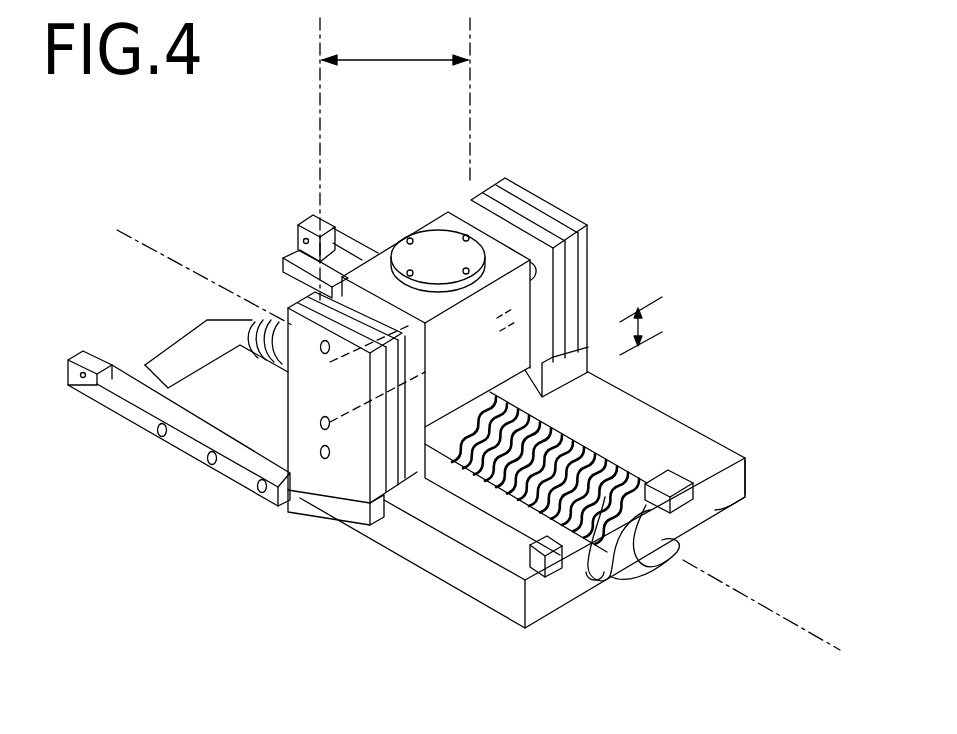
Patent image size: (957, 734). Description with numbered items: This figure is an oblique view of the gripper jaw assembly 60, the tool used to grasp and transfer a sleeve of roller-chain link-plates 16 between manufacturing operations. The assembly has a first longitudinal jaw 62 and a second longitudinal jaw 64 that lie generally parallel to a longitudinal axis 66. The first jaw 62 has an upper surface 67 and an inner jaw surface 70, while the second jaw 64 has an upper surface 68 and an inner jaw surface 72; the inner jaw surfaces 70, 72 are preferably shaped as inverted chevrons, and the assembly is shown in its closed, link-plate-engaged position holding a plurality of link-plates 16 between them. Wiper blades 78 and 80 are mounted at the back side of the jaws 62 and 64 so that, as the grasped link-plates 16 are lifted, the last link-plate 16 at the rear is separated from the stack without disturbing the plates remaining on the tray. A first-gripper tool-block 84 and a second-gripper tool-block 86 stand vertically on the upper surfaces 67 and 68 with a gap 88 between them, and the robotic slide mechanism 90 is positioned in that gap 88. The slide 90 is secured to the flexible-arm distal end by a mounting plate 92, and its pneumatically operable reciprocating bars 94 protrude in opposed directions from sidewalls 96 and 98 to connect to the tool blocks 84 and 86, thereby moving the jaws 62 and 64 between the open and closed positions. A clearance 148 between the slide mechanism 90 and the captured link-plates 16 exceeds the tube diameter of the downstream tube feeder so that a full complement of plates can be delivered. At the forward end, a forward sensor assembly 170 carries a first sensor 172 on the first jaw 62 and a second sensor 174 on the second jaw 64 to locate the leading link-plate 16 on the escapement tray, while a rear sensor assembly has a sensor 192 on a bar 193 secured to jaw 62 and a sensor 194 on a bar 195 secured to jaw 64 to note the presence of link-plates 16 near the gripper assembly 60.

The link-plate 16 is at (630, 552).
The gripper jaw assembly 60 is at (648, 270).
The first longitudinal jaw 62 is at (505, 597).
The second longitudinal jaw 64 is at (682, 420).
The longitudinal axis 66 is at (757, 600).
The upper surface 67 is at (737, 514).
The upper surface 68 is at (632, 425).
The inner jaw surface 70 is at (603, 584).
The inner jaw surface 72 is at (673, 553).
The wiper blade 78 is at (174, 352).
The wiper blade 80 is at (280, 255).
The first-gripper tool-block 84 is at (300, 508).
The second-gripper tool-block 86 is at (587, 225).
The gap 88 is at (395, 62).
The robotic slide mechanism 90 is at (420, 250).
The mounting plate 92 is at (418, 238).
The reciprocating bars 94 is at (323, 370).
The sidewall 96 is at (357, 463).
The sidewall 98 is at (500, 210).
The clearance 148 is at (643, 324).
The forward sensor assembly 170 is at (512, 549).
The first sensor 172 is at (547, 579).
The second sensor 174 is at (712, 458).
The sensor 192 is at (95, 362).
The bar 193 is at (118, 405).
The sensor 194 is at (318, 228).
The bar 195 is at (292, 246).